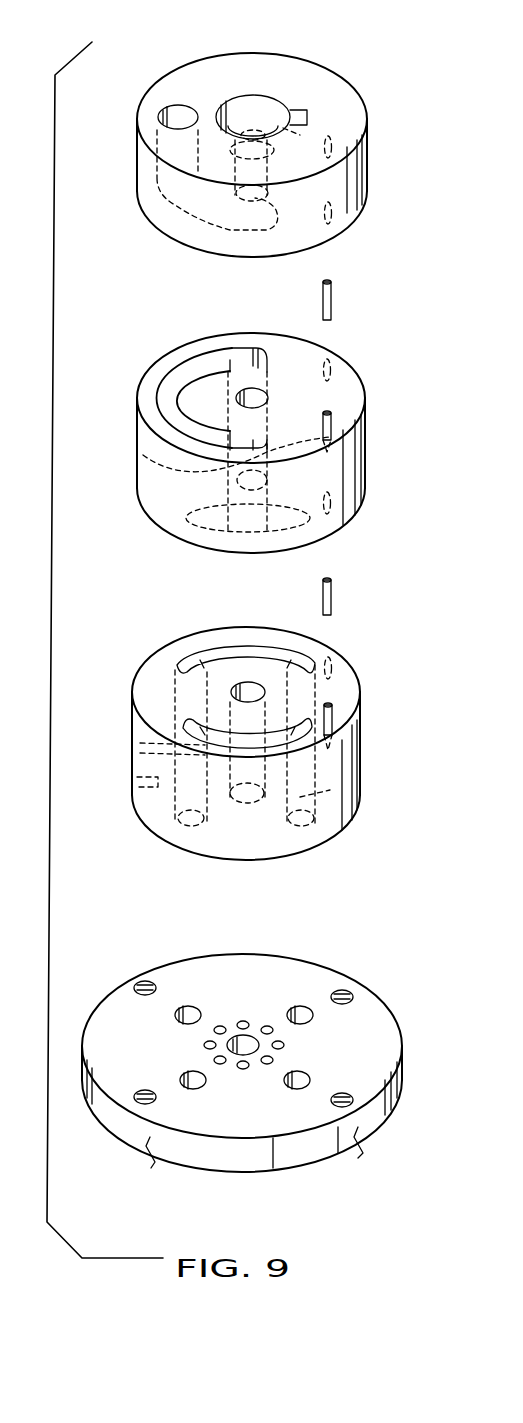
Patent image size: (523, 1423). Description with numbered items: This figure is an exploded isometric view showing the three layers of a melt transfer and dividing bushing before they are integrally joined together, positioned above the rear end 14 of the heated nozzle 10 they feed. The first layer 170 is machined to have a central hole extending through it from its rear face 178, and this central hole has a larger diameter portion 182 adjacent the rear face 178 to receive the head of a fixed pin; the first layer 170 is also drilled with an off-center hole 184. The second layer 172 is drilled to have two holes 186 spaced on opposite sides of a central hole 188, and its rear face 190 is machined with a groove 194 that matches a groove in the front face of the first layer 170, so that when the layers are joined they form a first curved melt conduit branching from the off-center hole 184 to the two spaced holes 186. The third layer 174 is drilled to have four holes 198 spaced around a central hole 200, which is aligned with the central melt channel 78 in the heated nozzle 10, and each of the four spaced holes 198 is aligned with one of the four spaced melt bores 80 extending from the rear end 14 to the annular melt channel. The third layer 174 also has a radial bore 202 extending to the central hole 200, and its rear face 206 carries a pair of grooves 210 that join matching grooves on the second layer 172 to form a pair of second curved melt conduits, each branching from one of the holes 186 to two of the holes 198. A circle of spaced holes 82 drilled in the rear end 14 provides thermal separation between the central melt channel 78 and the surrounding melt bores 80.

The heated nozzle 10 is at (271, 1042).
The rear end of heated nozzle 14 is at (373, 1028).
The central melt channel 78 is at (252, 1043).
The spaced melt bores 80 is at (307, 1015).
The circle of spaced holes 82 is at (240, 1020).
The first layer 170 is at (275, 131).
The second layer 172 is at (274, 416).
The third layer 174 is at (258, 719).
The rear face of first layer 178 is at (308, 83).
The larger diameter portion 182 is at (250, 106).
The off-center hole 184 is at (178, 110).
The spaced holes 186 is at (245, 355).
The central hole of second layer 188 is at (257, 398).
The rear face of second layer 190 is at (345, 385).
The groove 194 is at (185, 372).
The spaced holes of third layer 198 is at (300, 797).
The central hole of third layer 200 is at (253, 683).
The radial bore 202 is at (157, 753).
The rear face of third layer 206 is at (155, 685).
The grooves 210 is at (227, 648).